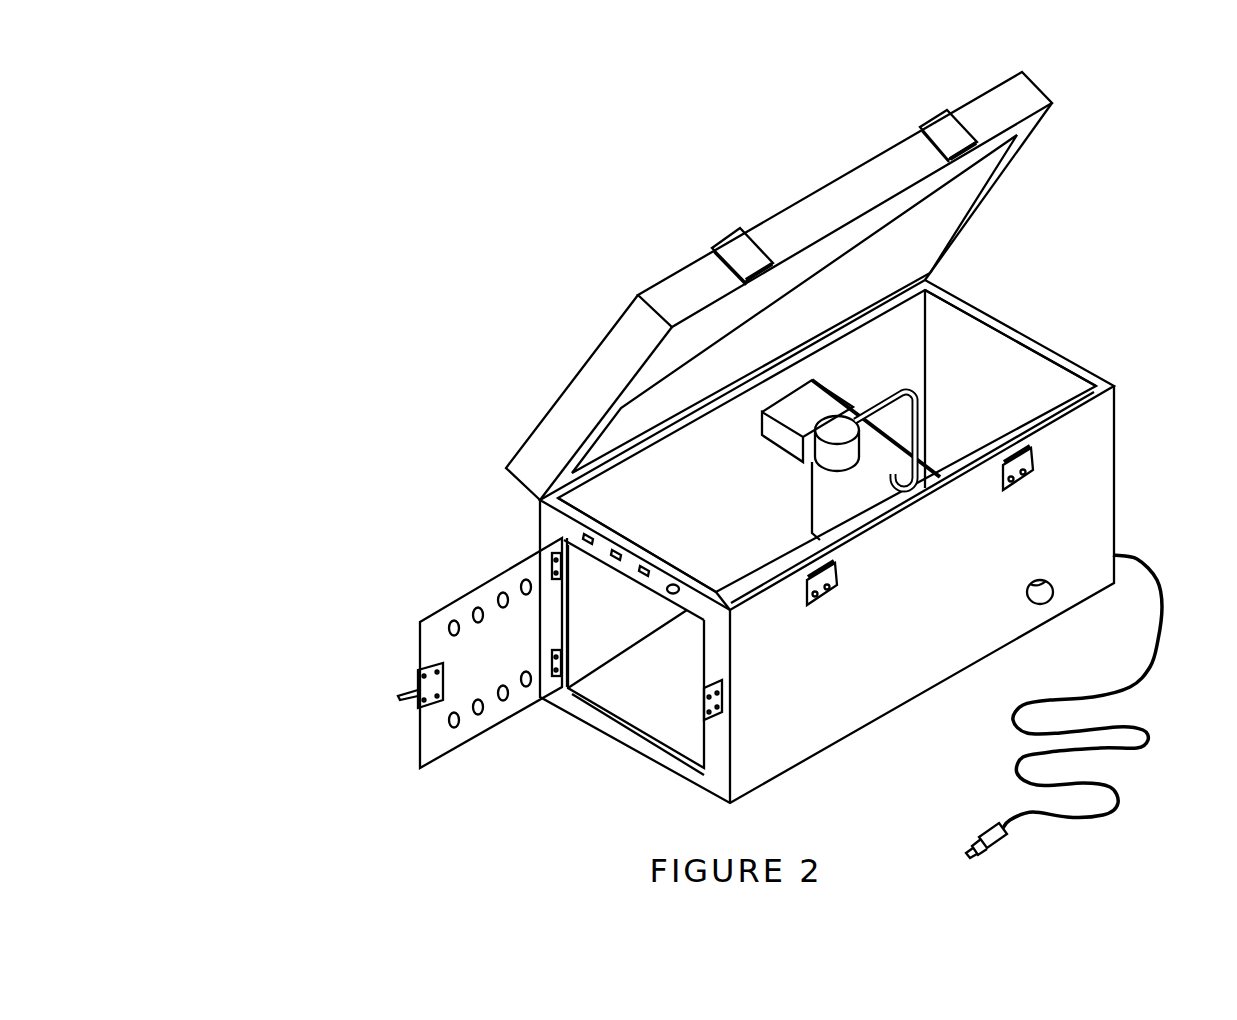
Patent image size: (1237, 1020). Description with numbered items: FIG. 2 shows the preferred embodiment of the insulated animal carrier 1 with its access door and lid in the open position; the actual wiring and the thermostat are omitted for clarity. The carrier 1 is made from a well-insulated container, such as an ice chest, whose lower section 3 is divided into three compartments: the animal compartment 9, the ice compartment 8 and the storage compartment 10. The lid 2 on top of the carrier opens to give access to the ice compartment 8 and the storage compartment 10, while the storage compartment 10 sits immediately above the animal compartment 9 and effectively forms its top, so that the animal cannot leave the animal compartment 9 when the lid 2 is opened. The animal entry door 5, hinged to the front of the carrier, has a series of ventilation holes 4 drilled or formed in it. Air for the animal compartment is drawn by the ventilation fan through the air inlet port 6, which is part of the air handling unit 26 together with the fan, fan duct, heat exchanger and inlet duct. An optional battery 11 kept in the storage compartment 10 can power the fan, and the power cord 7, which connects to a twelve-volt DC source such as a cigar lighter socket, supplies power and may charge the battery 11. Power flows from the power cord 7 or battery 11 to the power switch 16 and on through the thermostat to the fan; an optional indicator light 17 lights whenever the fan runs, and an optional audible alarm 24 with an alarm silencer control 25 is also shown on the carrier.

The carrier 1 is at (300, 787).
The lid 2 is at (1022, 92).
The lower section 3 is at (1068, 493).
The ventilation holes 4 is at (454, 728).
The animal entry door 5 is at (437, 655).
The air inlet port 6 is at (1050, 583).
The power cord 7 is at (1152, 762).
The ice compartment 8 is at (990, 377).
The animal compartment 9 is at (648, 693).
The storage compartment 10 is at (762, 513).
The battery 11 is at (818, 400).
The power switch 16 is at (586, 538).
The indicator light 17 is at (614, 554).
The audible alarm 24 is at (673, 584).
The alarm silencer control 25 is at (644, 568).
The air handling unit 26 is at (922, 385).